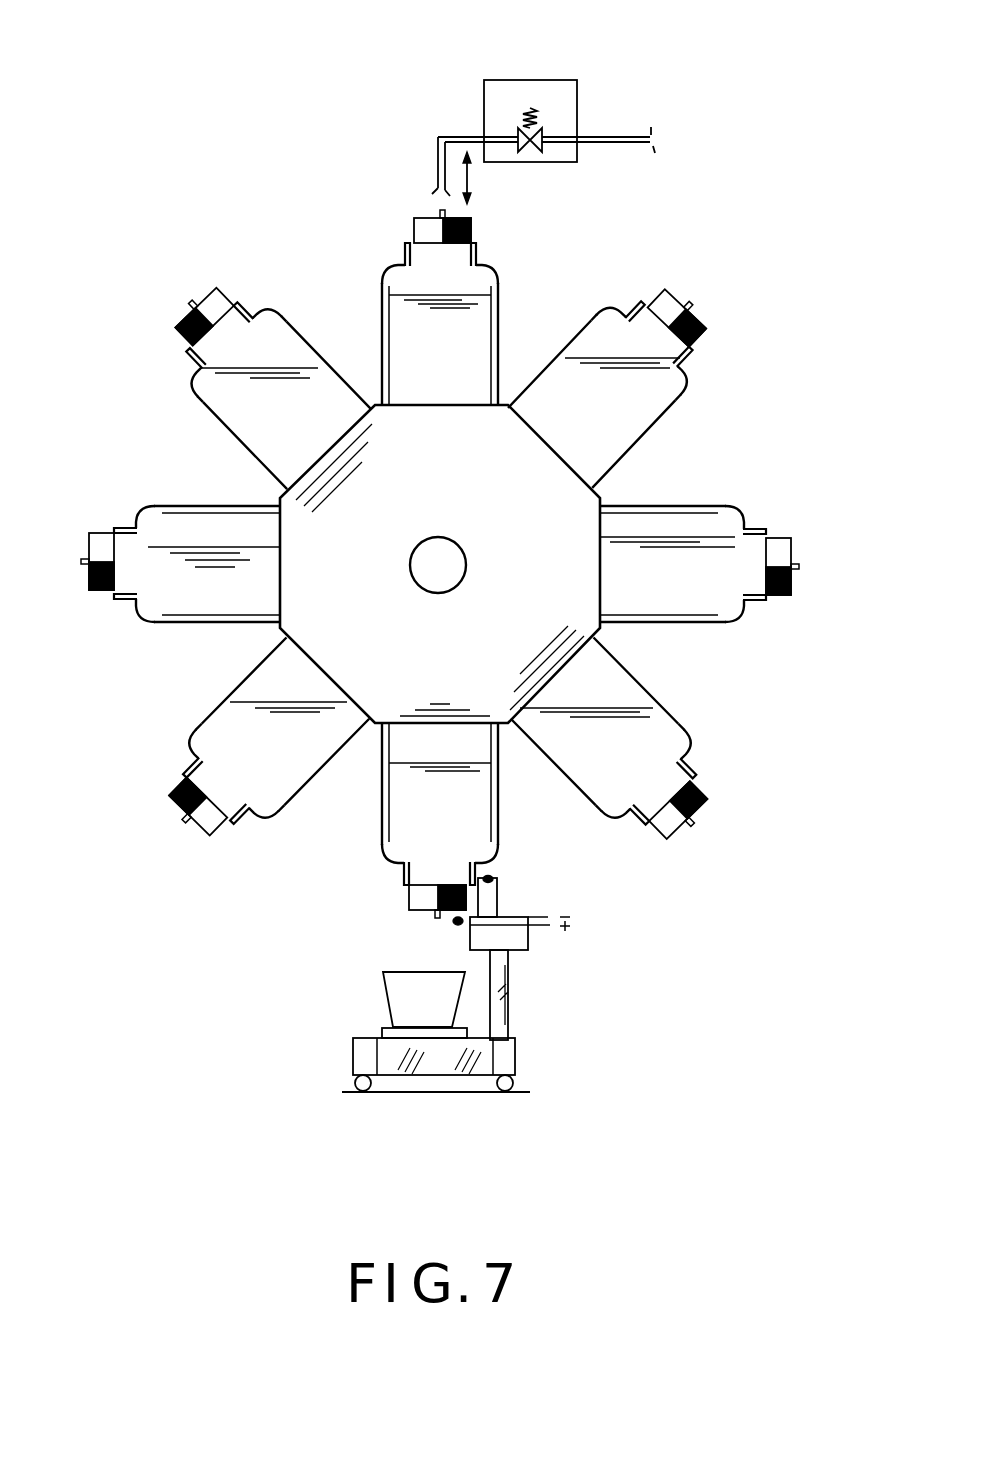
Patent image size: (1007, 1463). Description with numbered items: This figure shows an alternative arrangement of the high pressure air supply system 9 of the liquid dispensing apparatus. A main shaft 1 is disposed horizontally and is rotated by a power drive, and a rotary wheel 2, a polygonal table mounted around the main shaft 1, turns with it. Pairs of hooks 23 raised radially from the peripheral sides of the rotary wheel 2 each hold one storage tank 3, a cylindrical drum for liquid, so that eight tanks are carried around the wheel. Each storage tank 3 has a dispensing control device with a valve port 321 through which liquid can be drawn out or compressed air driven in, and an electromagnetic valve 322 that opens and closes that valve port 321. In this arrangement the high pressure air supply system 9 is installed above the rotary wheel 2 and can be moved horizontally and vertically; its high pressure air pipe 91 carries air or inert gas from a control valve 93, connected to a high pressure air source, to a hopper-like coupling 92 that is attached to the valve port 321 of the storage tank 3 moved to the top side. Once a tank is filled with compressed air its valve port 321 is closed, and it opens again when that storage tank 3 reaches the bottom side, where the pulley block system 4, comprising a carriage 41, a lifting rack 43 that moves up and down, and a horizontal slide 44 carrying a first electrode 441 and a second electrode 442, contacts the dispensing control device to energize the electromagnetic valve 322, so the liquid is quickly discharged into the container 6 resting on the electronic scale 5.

The main shaft 1 is at (453, 562).
The rotary wheel 2 is at (497, 430).
The storage tank 3 is at (390, 270).
The hooks 23 is at (498, 268).
The valve port 321 is at (437, 912).
The electromagnetic valve 322 is at (425, 897).
The pulley block system 4 is at (504, 973).
The carriage 41 is at (497, 1058).
The lifting rack 43 is at (503, 995).
The horizontal slide 44 is at (518, 942).
The first electrode 441 is at (455, 922).
The second electrode 442 is at (497, 893).
The electronic scale 5 is at (382, 1035).
The container 6 is at (403, 988).
The high pressure air supply system 9 is at (562, 95).
The high pressure air pipe 91 is at (618, 137).
The hopper-like coupling 92 is at (437, 187).
The control valve 93 is at (530, 108).